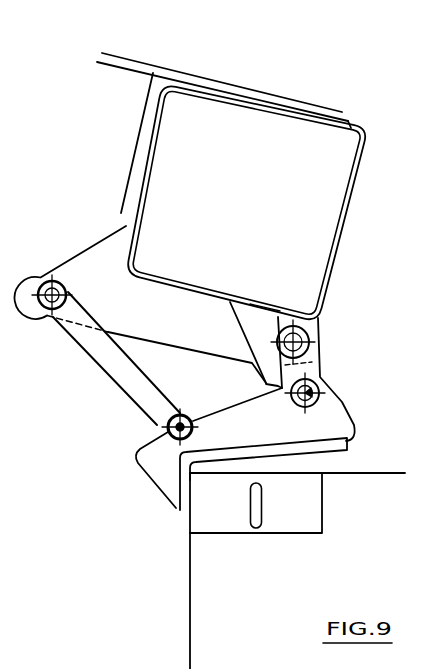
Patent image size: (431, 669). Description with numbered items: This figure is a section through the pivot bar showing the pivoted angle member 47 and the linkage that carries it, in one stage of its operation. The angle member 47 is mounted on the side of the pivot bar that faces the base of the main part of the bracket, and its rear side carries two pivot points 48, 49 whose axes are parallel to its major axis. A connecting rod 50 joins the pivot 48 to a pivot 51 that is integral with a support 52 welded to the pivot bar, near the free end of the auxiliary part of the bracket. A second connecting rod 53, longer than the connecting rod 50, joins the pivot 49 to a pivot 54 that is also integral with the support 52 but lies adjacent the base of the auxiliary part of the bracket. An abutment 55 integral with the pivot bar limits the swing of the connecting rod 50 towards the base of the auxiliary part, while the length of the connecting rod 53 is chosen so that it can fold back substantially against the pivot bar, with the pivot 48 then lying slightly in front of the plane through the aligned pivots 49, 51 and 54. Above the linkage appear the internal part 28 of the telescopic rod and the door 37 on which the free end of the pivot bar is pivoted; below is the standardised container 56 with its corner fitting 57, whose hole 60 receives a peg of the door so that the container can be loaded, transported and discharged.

The internal part 28 is at (117, 95).
The door 37 is at (358, 182).
The pivoted angle member 47 is at (347, 444).
The pivot point 48 is at (323, 387).
The pivot point 49 is at (195, 423).
The connecting rod 50 is at (312, 372).
The pivot 51 is at (312, 340).
The support 52 is at (180, 320).
The connecting rod 53 is at (145, 375).
The pivot 54 is at (67, 288).
The abutment 55 is at (260, 312).
The standardised container 56 is at (188, 623).
The corner fitting 57 is at (325, 508).
The hole 60 is at (255, 528).